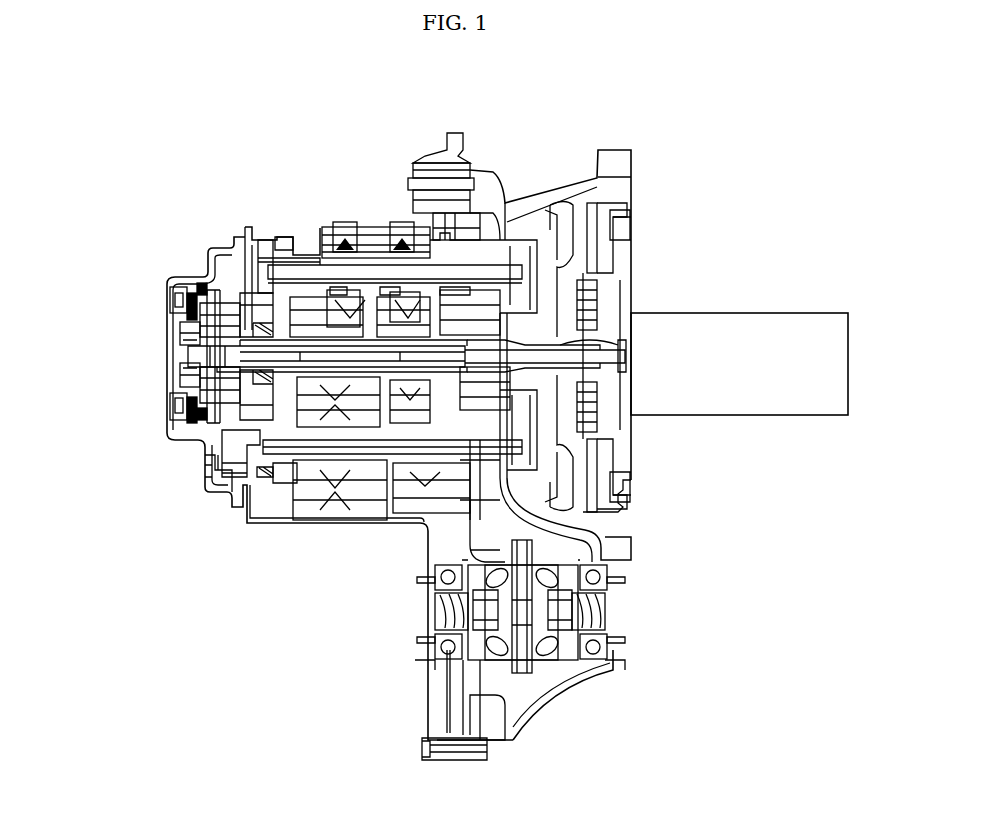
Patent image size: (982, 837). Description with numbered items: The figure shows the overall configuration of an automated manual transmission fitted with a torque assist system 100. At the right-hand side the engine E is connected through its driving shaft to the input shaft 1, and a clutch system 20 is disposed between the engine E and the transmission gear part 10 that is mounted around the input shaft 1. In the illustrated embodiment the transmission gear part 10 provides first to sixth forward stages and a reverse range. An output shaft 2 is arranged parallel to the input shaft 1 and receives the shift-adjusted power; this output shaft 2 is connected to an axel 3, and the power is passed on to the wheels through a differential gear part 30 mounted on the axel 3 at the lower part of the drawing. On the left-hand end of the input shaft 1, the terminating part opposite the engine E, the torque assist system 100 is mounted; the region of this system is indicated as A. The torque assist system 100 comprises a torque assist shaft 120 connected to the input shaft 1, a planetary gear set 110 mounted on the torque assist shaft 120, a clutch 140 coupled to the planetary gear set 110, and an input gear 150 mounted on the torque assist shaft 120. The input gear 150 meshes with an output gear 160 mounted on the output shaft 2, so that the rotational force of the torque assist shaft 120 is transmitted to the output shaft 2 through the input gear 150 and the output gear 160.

The input shaft 1 is at (628, 345).
The output shaft 2 is at (215, 450).
The axel 3 is at (600, 617).
The transmission gear part 10 is at (378, 202).
The clutch system 20 is at (641, 203).
The differential gear part 30 is at (527, 645).
The torque assist system 100 is at (229, 224).
The planetary gear set 110 is at (158, 320).
The torque assist shaft 120 is at (197, 367).
The clutch 140 is at (197, 285).
The input gear 150 is at (167, 292).
The output gear 160 is at (235, 470).
The region A is at (186, 266).
The engine E is at (743, 327).